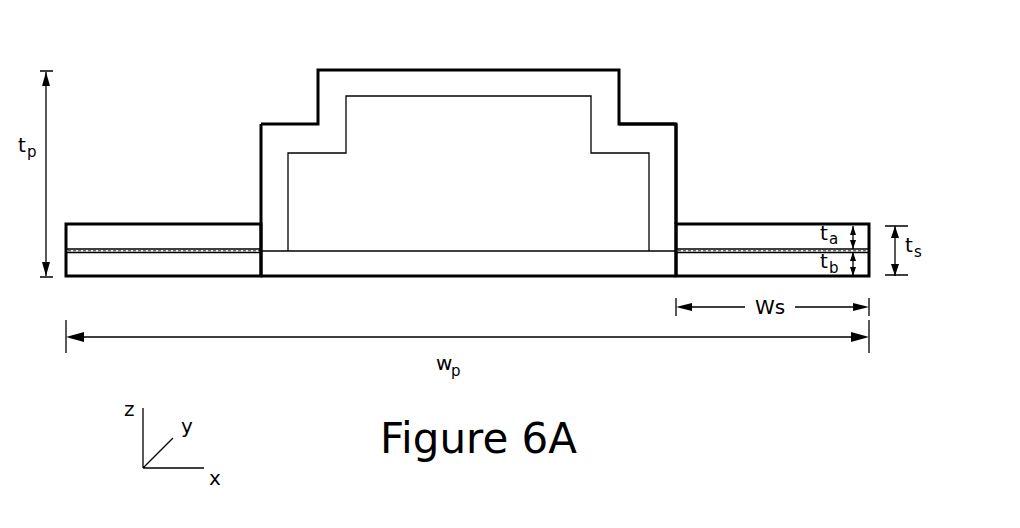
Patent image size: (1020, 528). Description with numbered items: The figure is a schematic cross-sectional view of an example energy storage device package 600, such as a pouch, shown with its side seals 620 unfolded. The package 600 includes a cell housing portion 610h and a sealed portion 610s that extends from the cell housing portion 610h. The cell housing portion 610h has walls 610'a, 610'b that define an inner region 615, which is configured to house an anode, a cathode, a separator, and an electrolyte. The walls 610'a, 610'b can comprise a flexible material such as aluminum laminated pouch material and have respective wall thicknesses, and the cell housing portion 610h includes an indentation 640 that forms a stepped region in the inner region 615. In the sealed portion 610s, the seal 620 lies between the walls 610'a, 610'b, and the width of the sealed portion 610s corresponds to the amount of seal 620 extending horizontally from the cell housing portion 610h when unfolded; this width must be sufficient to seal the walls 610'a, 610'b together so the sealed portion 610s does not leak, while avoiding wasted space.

The package 600 is at (572, 22).
The cell housing portion 610h is at (352, 70).
The sealed portion 610s is at (839, 152).
The wall 610'a is at (468, 164).
The wall 610'b is at (468, 230).
The inner region 615 is at (478, 183).
The side seal 620 is at (128, 254).
The indentation 640 is at (638, 121).